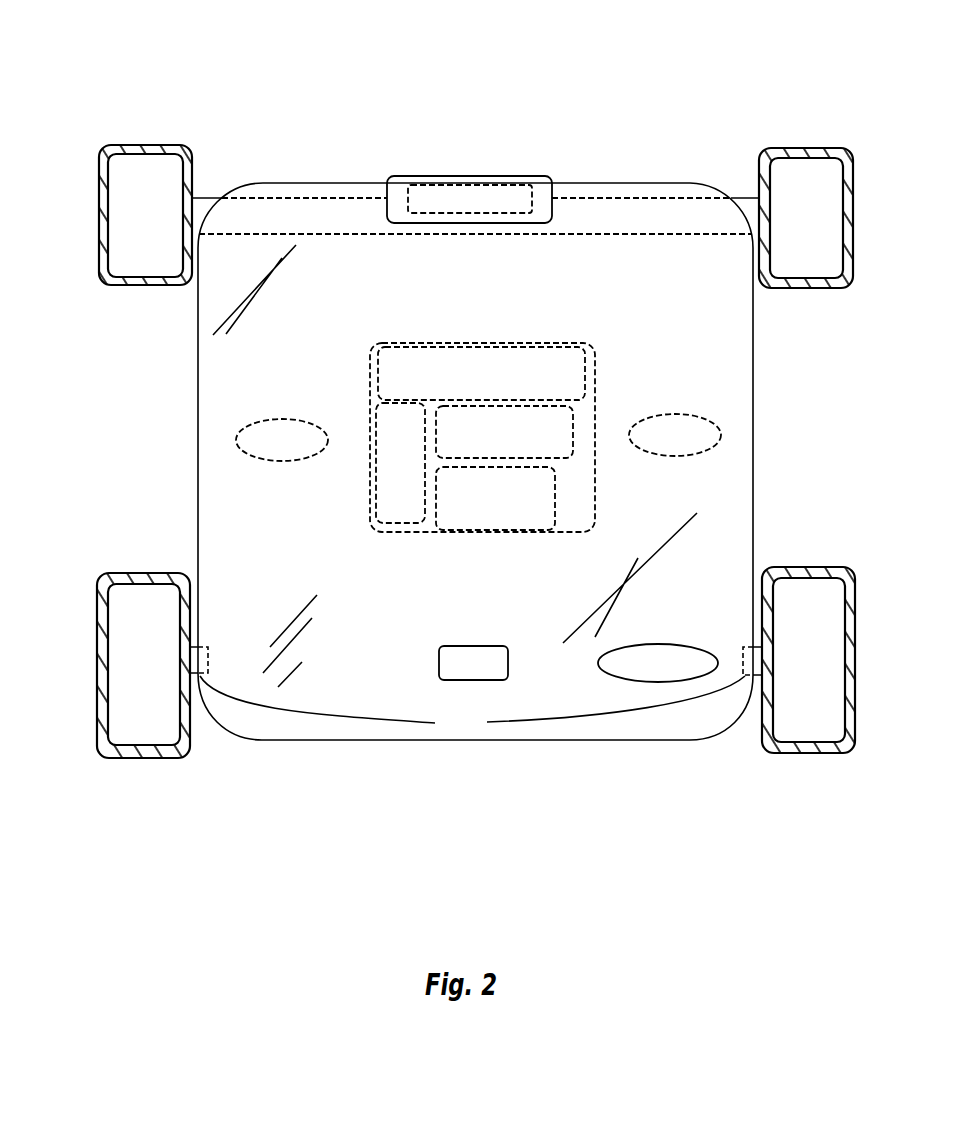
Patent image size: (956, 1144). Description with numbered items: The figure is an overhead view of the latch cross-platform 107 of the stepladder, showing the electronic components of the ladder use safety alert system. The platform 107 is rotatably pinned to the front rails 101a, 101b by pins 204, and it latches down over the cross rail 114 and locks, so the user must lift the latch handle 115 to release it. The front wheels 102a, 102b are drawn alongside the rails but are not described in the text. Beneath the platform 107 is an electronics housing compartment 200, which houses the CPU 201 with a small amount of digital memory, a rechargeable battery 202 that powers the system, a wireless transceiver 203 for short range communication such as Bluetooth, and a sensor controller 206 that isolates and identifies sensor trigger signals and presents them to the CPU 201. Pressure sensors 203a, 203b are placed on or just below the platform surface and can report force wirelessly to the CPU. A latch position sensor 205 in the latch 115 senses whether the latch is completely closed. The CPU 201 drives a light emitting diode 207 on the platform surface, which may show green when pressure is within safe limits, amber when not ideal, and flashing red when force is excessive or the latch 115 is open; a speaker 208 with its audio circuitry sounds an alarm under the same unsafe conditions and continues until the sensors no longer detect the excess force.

The latch cross-platform 107 is at (332, 106).
The cross rail 114 is at (650, 234).
The latch handle 115 is at (484, 176).
The latch position sensor 205 is at (473, 213).
The front right wheel 102a is at (812, 148).
The front left wheel 102b is at (146, 145).
The front rail 101a is at (812, 753).
The front rail 101b is at (150, 757).
The pin 204 is at (472, 706).
The electronics housing compartment 200 is at (487, 343).
The CPU 201 is at (377, 375).
The rechargeable battery 202 is at (377, 460).
The sensor controller 206 is at (595, 421).
The wireless transceiver 203 is at (532, 530).
The pressure sensor 203a is at (675, 415).
The pressure sensor 203b is at (283, 418).
The light emitting diode 207 is at (477, 646).
The speaker 208 is at (660, 645).